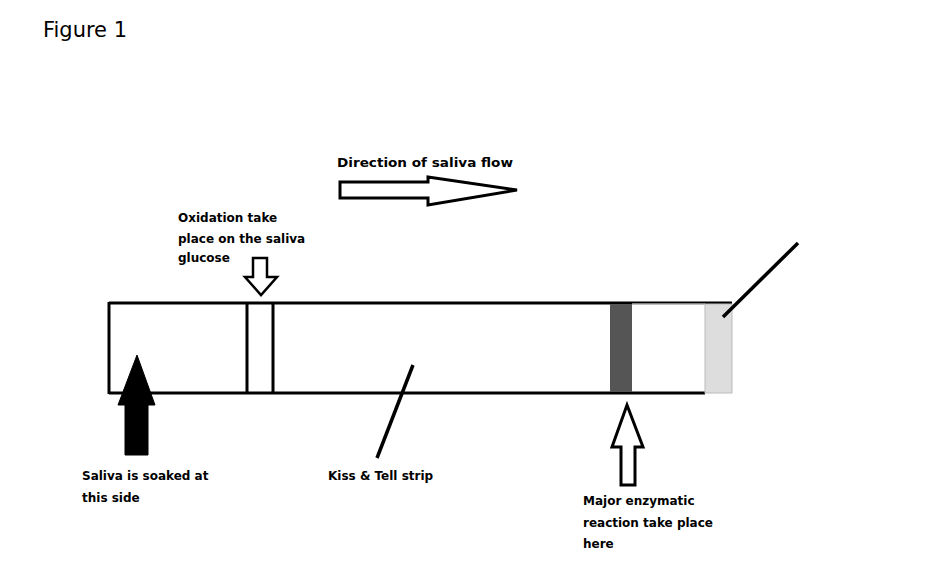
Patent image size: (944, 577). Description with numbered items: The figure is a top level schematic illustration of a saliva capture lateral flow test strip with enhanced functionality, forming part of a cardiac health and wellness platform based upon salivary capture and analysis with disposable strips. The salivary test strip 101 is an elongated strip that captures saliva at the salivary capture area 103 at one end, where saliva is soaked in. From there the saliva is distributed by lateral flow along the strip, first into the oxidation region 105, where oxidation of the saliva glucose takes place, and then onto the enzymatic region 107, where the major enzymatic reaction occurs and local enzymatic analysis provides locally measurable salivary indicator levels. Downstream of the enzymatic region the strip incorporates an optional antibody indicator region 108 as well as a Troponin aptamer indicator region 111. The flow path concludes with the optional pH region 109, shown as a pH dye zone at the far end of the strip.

The salivary test strip 101 is at (108, 345).
The salivary capture area 103 is at (167, 308).
The oxidation region 105 is at (263, 197).
The enzymatic region 107 is at (625, 302).
The antibody indicator region 108 is at (663, 308).
The Troponin aptamer indicator region 111 is at (697, 308).
The pH region 109 is at (722, 302).